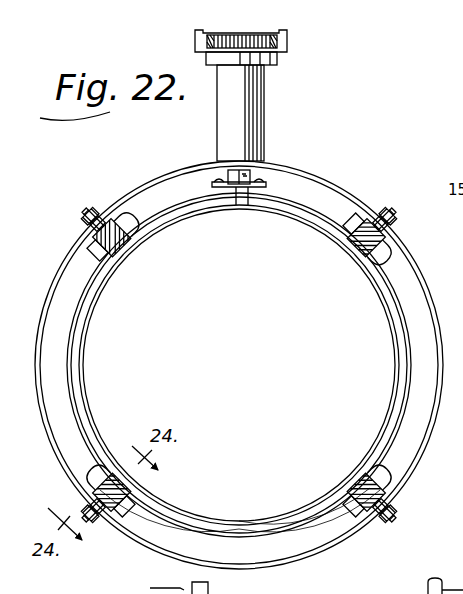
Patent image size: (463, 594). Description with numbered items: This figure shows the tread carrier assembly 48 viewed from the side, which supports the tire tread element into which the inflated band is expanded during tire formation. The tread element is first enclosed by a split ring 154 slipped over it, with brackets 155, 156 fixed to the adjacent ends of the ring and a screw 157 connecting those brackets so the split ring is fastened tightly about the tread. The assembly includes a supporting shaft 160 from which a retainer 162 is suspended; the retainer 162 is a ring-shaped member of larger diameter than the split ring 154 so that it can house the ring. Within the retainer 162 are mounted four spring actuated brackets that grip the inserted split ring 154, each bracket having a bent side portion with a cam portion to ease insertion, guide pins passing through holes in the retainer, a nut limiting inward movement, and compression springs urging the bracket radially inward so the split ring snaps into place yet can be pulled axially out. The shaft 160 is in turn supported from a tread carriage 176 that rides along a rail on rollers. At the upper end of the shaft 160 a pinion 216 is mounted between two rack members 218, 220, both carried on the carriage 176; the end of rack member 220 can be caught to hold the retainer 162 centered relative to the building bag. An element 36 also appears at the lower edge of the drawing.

The tread carrier assembly 48 is at (312, 115).
The split ring 154 is at (327, 207).
The bracket 155 is at (237, 190).
The bracket 156 is at (249, 188).
The screw 157 is at (225, 176).
The supporting shaft 160 is at (256, 95).
The retainer 162 is at (460, 247).
The tread carriage 176 is at (288, 33).
The pinion 216 is at (250, 29).
The rack member 218 is at (199, 39).
The rack member 220 is at (280, 44).
The base element 36 is at (354, 593).